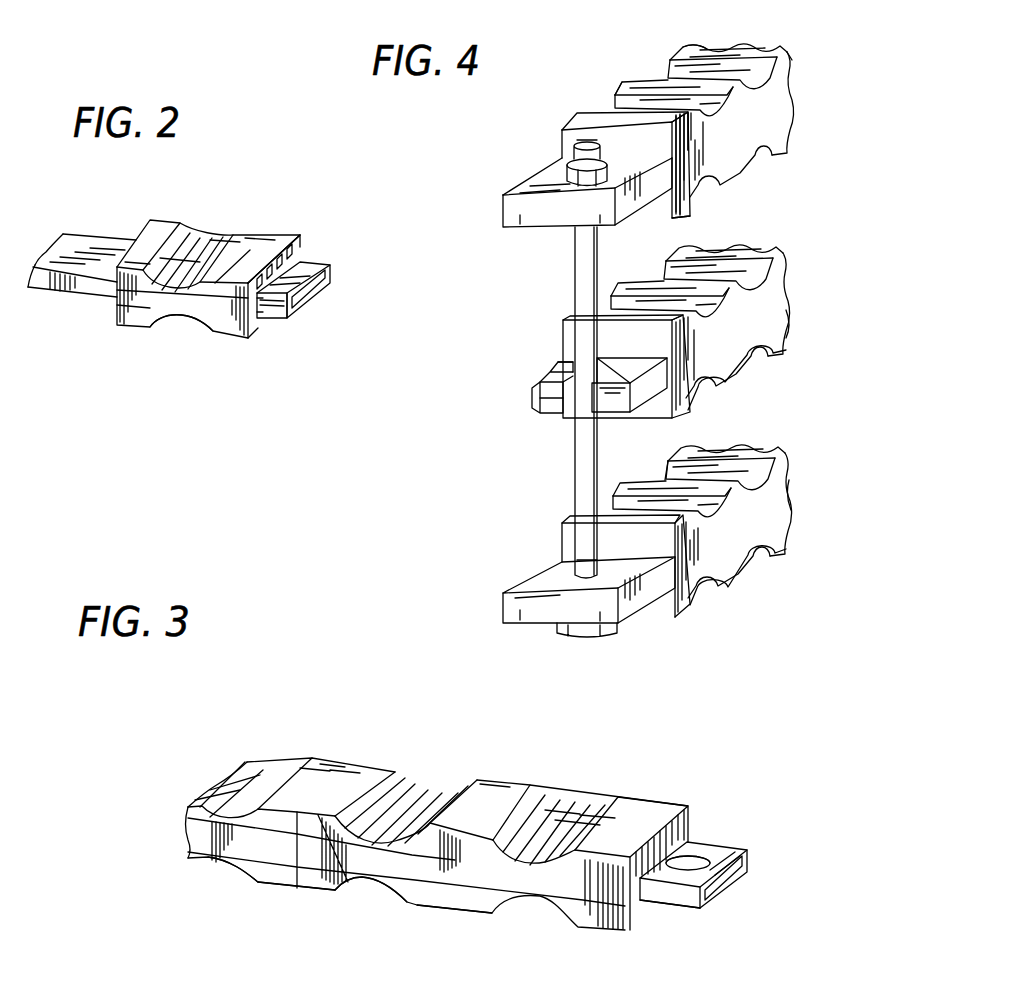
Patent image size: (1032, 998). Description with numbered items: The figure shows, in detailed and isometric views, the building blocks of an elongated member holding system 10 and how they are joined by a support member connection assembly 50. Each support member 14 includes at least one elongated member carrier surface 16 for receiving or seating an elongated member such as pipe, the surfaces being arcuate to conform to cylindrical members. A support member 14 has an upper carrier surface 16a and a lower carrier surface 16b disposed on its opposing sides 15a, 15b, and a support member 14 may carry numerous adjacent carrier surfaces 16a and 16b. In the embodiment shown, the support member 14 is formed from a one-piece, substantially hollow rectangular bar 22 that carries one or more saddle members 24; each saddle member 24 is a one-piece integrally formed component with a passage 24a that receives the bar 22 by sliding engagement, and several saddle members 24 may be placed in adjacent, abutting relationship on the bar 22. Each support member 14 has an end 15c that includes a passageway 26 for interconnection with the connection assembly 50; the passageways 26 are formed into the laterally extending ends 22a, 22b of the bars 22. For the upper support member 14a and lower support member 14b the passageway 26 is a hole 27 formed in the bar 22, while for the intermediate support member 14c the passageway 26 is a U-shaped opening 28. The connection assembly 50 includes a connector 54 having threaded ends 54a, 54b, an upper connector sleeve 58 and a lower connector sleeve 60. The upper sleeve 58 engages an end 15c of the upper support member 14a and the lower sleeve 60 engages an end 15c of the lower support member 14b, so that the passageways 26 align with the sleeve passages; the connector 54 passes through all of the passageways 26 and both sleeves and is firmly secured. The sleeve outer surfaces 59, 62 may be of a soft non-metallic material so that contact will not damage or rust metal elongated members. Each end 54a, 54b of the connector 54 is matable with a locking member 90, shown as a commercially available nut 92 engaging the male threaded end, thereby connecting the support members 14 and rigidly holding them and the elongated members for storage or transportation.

In FIG. 4, the elongated member holding system 10 is at (817, 38).
In FIG. 2, the support member 14 is at (330, 207).
In FIG. 4, the support member 14 is at (780, 112).
In FIG. 3, the support member 14 is at (312, 690).
In FIG. 4, the upper support member 14a is at (680, 53).
In FIG. 4, the lower support member 14b is at (782, 488).
In FIG. 4, the intermediate support member 14c is at (770, 332).
In FIG. 2, the side of the support member 15a is at (317, 263).
In FIG. 2, the side of the support member 15b is at (290, 323).
In FIG. 4, the end of the support member 15c is at (540, 155).
In FIG. 2, the elongated member carrier surface 16 is at (247, 240).
In FIG. 4, the elongated member carrier surface 16 is at (613, 107).
In FIG. 3, the elongated member carrier surface 16 is at (218, 790).
In FIG. 2, the upper carrier surface 16a is at (220, 247).
In FIG. 3, the upper carrier surface 16a is at (253, 770).
In FIG. 2, the lower carrier surface 16b is at (193, 320).
In FIG. 3, the lower carrier surface 16b is at (343, 885).
In FIG. 2, the bar 22 is at (80, 242).
In FIG. 4, the bar 22 is at (612, 400).
In FIG. 3, the bar 22 is at (725, 850).
In FIG. 4, the end of the bar 22a is at (560, 365).
In FIG. 3, the end of the bar 22b is at (690, 906).
In FIG. 2, the saddle member 24 is at (172, 223).
In FIG. 3, the saddle member 24 is at (365, 775).
In FIG. 2, the passage 24a is at (257, 303).
In FIG. 4, the passageway 26 is at (545, 375).
In FIG. 3, the passageway 26 is at (695, 850).
In FIG. 3, the hole 27 is at (675, 845).
In FIG. 4, the U-shaped opening 28 is at (563, 412).
In FIG. 4, the support member connection assembly 50 is at (630, 377).
In FIG. 4, the connector 54 is at (573, 475).
In FIG. 4, the upper end of the connector 54a is at (613, 147).
In FIG. 4, the lower end of the connector 54b is at (555, 570).
In FIG. 4, the upper connector sleeve 58 is at (500, 218).
In FIG. 4, the sleeve outer surface 59 is at (537, 183).
In FIG. 4, the lower connector sleeve 60 is at (502, 627).
In FIG. 4, the sleeve outer surface 62 is at (513, 605).
In FIG. 4, the locking member 90 is at (563, 148).
In FIG. 4, the nut 92 is at (585, 180).